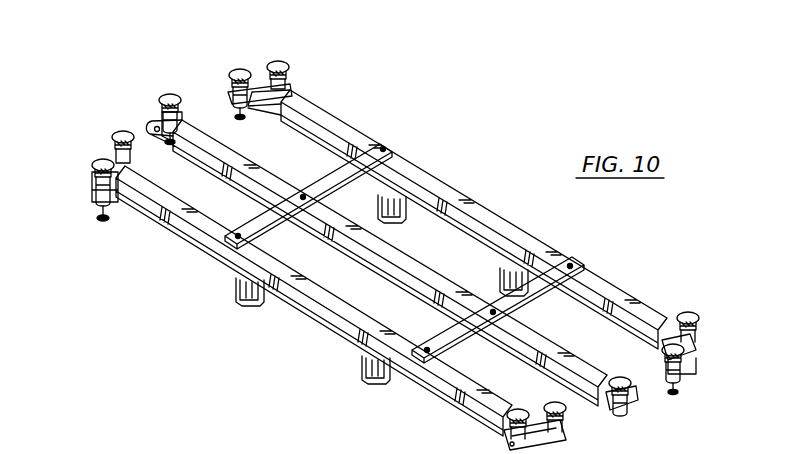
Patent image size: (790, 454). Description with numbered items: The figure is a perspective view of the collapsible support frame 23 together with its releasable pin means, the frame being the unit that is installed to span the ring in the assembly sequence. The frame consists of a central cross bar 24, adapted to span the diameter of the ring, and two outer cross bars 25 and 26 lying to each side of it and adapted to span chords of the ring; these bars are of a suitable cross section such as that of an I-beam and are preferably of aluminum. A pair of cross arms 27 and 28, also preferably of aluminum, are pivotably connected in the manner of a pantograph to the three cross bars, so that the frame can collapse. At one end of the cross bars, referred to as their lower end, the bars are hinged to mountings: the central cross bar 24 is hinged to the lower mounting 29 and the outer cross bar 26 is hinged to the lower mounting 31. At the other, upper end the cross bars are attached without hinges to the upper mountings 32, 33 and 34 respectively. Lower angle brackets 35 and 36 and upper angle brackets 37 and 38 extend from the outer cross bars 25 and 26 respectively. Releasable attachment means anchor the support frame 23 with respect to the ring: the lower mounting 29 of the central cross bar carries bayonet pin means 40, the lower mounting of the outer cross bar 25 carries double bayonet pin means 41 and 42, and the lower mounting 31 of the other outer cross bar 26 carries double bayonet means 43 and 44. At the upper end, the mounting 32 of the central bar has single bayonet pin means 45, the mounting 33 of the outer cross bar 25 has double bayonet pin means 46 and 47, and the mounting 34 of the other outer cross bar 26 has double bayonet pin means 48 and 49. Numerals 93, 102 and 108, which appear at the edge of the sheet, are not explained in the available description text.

The collapsible support frame 23 is at (454, 162).
The central cross bar 24 is at (395, 258).
The outer cross bar 25 is at (315, 308).
The outer cross bar 26 is at (497, 226).
The cross arm 27 is at (363, 160).
The cross arm 28 is at (560, 274).
The lower mounting 29 is at (524, 412).
The lower mounting 31 is at (667, 340).
The upper mounting 32 is at (156, 101).
The upper mounting 33 is at (82, 157).
The upper mounting 34 is at (286, 67).
The lower angle bracket 35 is at (360, 373).
The lower angle bracket 36 is at (502, 282).
The upper angle bracket 37 is at (234, 291).
The upper angle bracket 38 is at (382, 210).
The bayonet pin means 40 is at (636, 396).
The double bayonet pin means 41 is at (506, 423).
The double bayonet pin means 42 is at (552, 398).
The double bayonet means 43 is at (660, 363).
The double bayonet means 44 is at (698, 318).
The single bayonet pin means 45 is at (182, 120).
The double bayonet pin means 46 is at (98, 158).
The double bayonet pin means 47 is at (118, 131).
The double bayonet pin means 48 is at (244, 64).
The double bayonet pin means 49 is at (282, 60).
The element 93 is at (354, 453).
The element 102 is at (262, 453).
The element 108 is at (422, 453).